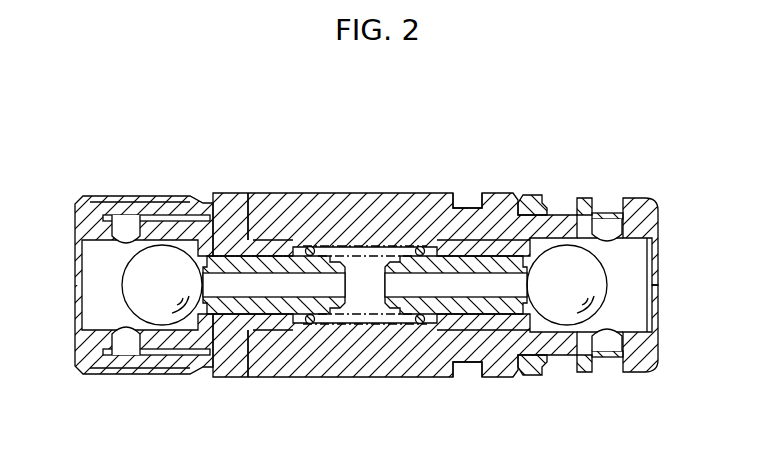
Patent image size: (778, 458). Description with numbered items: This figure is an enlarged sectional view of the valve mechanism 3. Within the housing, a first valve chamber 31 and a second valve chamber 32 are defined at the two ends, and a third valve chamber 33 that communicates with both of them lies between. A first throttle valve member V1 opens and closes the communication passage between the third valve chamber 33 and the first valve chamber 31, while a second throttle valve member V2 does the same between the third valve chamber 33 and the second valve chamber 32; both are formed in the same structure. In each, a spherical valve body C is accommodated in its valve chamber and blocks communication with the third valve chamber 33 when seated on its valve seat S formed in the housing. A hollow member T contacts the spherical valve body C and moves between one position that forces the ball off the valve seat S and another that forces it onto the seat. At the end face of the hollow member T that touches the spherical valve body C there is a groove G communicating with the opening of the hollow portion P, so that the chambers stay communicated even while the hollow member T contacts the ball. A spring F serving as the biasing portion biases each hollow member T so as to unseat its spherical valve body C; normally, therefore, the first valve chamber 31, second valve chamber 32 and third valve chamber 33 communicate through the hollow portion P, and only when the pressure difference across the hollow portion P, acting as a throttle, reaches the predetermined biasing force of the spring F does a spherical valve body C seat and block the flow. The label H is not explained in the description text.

The valve mechanism 3 is at (515, 168).
The first valve chamber 31 is at (108, 312).
The second valve chamber 32 is at (610, 312).
The third valve chamber 33 is at (362, 288).
The spherical valve body C is at (152, 287).
The valve seat S is at (228, 195).
The groove G is at (306, 323).
The hollow portion P is at (292, 312).
The hollow member T is at (278, 315).
The housing H is at (322, 195).
The spring F is at (387, 247).
The first throttle valve member V1 is at (268, 181).
The second throttle valve member V2 is at (467, 191).